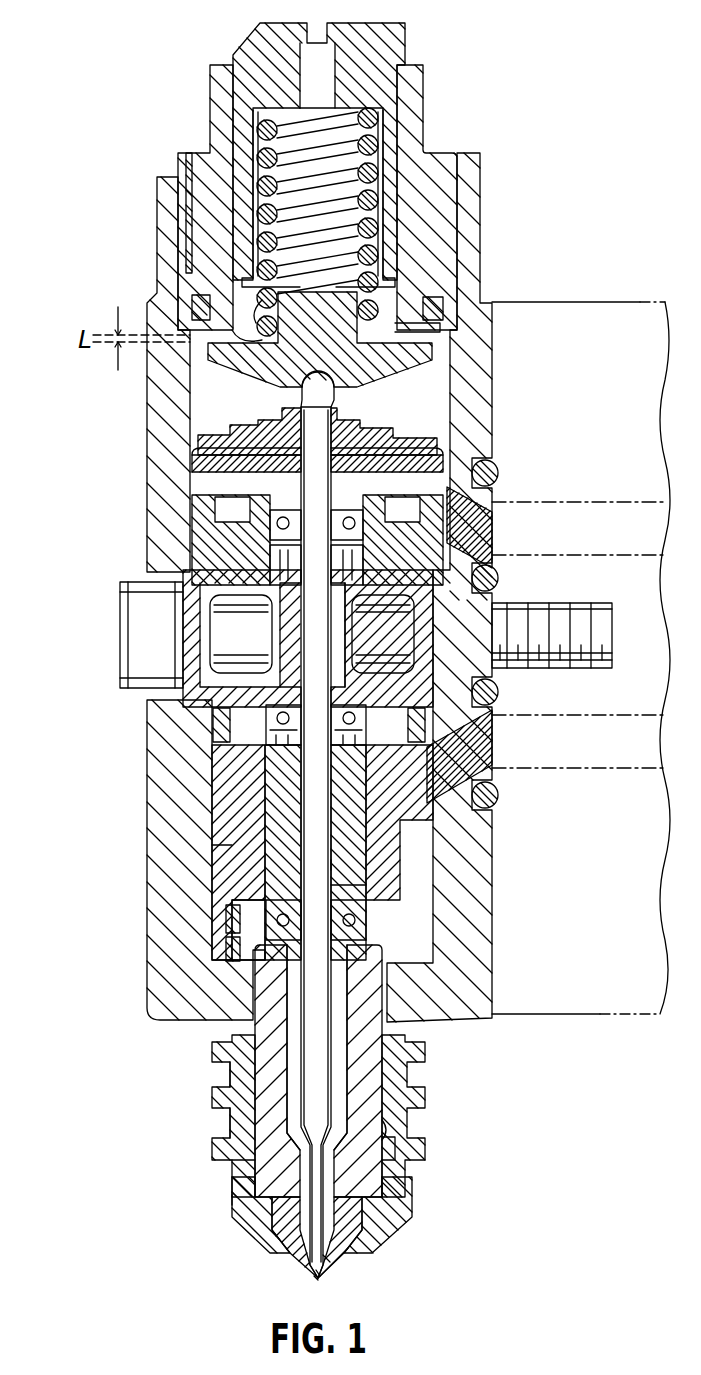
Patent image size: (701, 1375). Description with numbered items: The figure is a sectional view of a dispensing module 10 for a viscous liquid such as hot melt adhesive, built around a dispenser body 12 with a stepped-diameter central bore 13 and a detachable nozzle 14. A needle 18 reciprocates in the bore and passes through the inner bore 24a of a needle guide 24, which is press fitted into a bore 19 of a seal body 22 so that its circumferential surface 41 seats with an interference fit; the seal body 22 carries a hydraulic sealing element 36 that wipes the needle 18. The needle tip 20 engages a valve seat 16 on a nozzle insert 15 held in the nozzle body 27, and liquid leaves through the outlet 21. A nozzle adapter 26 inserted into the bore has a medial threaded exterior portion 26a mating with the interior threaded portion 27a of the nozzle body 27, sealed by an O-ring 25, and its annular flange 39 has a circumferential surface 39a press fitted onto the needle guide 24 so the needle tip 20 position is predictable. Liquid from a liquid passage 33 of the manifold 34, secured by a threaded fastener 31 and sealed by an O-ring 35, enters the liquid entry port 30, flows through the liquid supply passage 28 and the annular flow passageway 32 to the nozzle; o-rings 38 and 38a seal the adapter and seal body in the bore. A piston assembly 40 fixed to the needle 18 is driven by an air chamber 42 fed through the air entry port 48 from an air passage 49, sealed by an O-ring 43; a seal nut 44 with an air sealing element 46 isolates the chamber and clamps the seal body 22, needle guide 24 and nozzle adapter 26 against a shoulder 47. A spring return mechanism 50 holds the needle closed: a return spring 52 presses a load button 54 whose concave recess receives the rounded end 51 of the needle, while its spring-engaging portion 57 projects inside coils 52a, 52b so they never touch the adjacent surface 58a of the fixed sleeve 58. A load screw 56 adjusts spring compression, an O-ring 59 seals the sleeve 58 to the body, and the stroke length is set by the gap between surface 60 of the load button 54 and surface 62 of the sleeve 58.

The dispensing module 10 is at (62, 152).
The dispenser body 12 is at (465, 935).
The central bore 13 is at (212, 845).
The nozzle 14 is at (412, 1200).
The nozzle insert 15 is at (255, 1245).
The valve seat 16 is at (332, 1258).
The needle 18 is at (331, 860).
The bore 19 is at (255, 885).
The needle tip 20 is at (320, 1276).
The outlet 21 is at (314, 1280).
The seal body 22 is at (245, 792).
The needle guide 24 is at (280, 818).
The inner bore 24a is at (331, 885).
The O-ring 25 is at (240, 1165).
The nozzle adapter 26 is at (250, 1040).
The medial threaded exterior portion 26a is at (232, 1105).
The nozzle body 27 is at (232, 1200).
The interior threaded portion 27a is at (232, 1068).
The liquid supply passage 28 is at (412, 820).
The liquid entry port 30 is at (459, 756).
The threaded fastener 31 is at (138, 618).
The annular flow passageway 32 is at (345, 1030).
The liquid passage 33 is at (575, 754).
The manifold 34 is at (578, 302).
The O-ring 35 is at (494, 690).
The hydraulic sealing element 36 is at (222, 726).
The o-ring 38 is at (248, 908).
The o-ring 38a is at (278, 722).
The annular flange 39 is at (228, 920).
The circumferential surface 39a is at (235, 940).
The piston assembly 40 is at (400, 438).
The circumferential surface 41 is at (300, 858).
The air chamber 42 is at (468, 445).
The O-ring 43 is at (497, 466).
The seal nut 44 is at (200, 545).
The air sealing element 46 is at (353, 518).
The shoulder 47 is at (255, 962).
The air entry port 48 is at (469, 527).
The air passage 49 is at (575, 534).
The spring return mechanism 50 is at (410, 66).
The rounded end 51 is at (335, 390).
The return spring 52 is at (322, 150).
The coil 52a is at (188, 250).
The coil 52b is at (232, 355).
The load button 54 is at (282, 412).
The load screw 56 is at (392, 52).
The spring-engaging portion 57 is at (392, 232).
The sleeve 58 is at (457, 212).
The adjacent surface 58a is at (440, 298).
The O-ring 59 is at (192, 300).
The surface 60 is at (240, 356).
The surface 62 is at (440, 332).